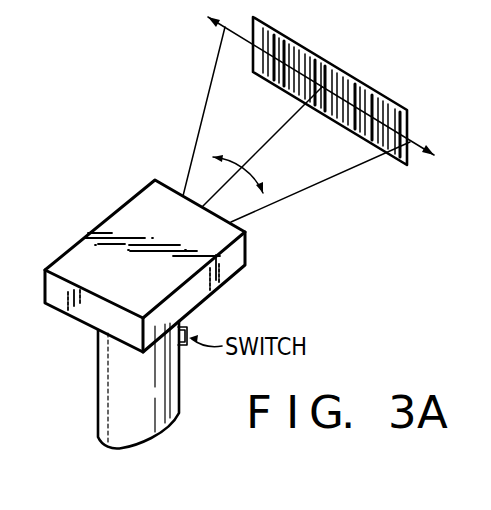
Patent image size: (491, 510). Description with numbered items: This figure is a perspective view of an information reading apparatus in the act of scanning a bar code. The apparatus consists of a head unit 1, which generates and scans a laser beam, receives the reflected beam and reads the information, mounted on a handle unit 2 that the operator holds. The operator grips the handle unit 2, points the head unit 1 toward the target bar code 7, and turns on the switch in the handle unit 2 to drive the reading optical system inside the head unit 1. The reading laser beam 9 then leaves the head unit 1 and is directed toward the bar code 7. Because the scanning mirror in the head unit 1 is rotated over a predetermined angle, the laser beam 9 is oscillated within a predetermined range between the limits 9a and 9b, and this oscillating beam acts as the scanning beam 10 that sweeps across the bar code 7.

The head unit 1 is at (198, 303).
The handle unit 2 is at (180, 367).
The bar code 7 is at (315, 57).
The reading laser beam 9 is at (271, 138).
The scanning range limit 9a is at (280, 198).
The scanning range limit 9b is at (196, 141).
The scanning beam 10 is at (270, 177).